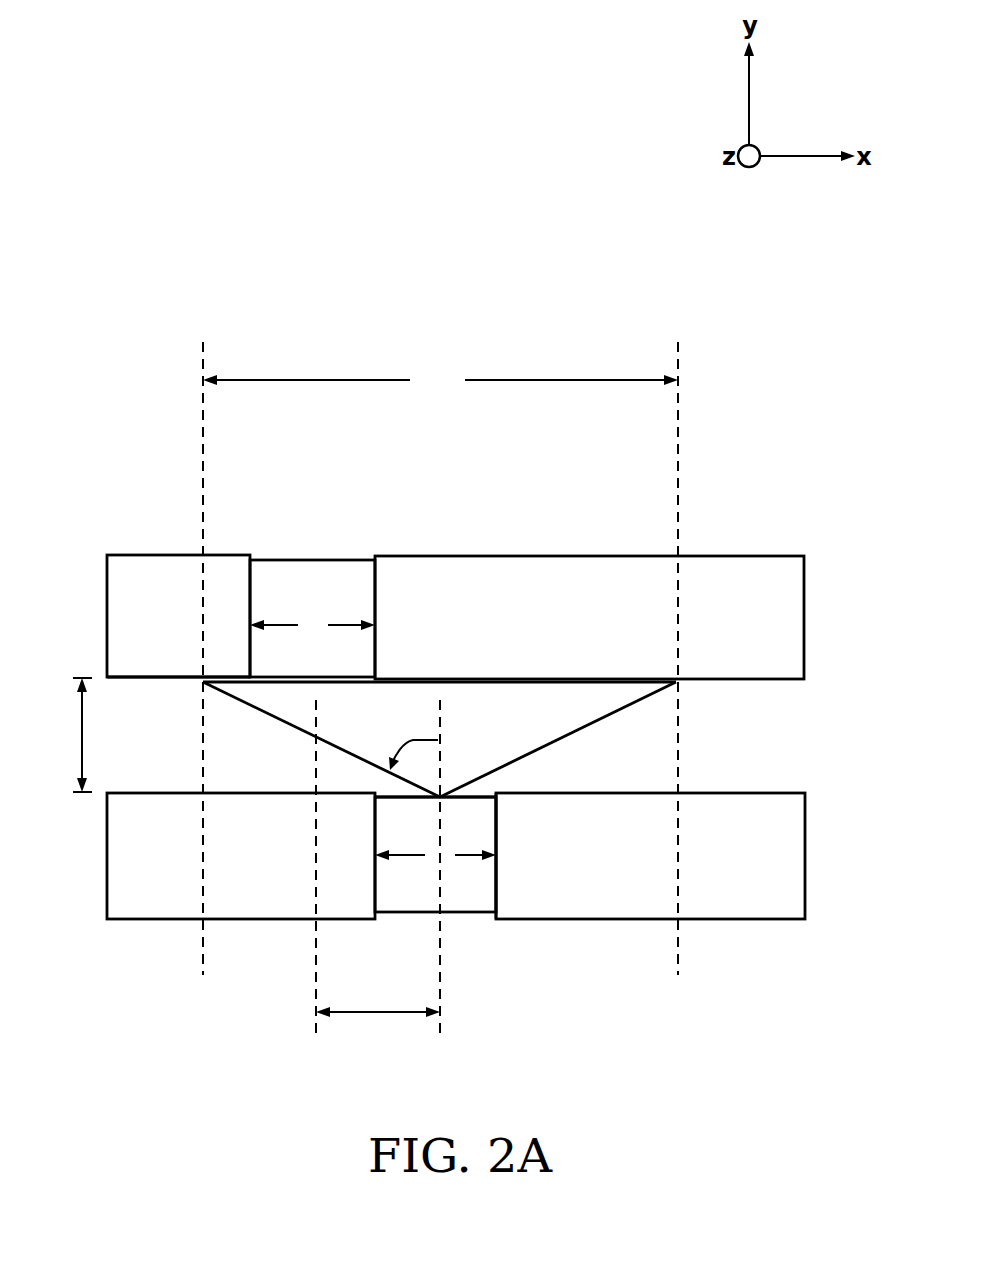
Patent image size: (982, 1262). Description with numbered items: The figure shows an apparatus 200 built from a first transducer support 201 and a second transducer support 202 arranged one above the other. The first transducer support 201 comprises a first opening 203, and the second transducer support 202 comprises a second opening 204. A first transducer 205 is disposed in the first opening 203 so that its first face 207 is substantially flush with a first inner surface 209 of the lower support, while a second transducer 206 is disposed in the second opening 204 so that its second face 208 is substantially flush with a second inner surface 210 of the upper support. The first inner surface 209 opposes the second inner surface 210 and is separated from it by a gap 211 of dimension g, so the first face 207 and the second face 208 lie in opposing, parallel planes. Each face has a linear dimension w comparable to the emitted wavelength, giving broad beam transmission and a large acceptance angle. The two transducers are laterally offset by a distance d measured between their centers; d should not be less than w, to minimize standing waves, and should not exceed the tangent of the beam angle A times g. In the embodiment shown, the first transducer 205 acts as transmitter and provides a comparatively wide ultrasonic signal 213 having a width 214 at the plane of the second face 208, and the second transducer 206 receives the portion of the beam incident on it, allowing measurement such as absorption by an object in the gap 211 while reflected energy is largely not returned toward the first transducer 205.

The apparatus 200 is at (468, 284).
The first transducer support 201 is at (792, 880).
The second transducer support 202 is at (782, 597).
The first opening 203 is at (497, 882).
The second opening 204 is at (253, 545).
The first transducer 205 is at (467, 900).
The second transducer 206 is at (348, 580).
The first face 207 is at (485, 798).
The second face 208 is at (265, 666).
The first inner surface 209 is at (285, 803).
The second inner surface 210 is at (143, 676).
The gap 211 is at (780, 733).
The ultrasonic signal 213 is at (532, 732).
The width 214 is at (440, 658).